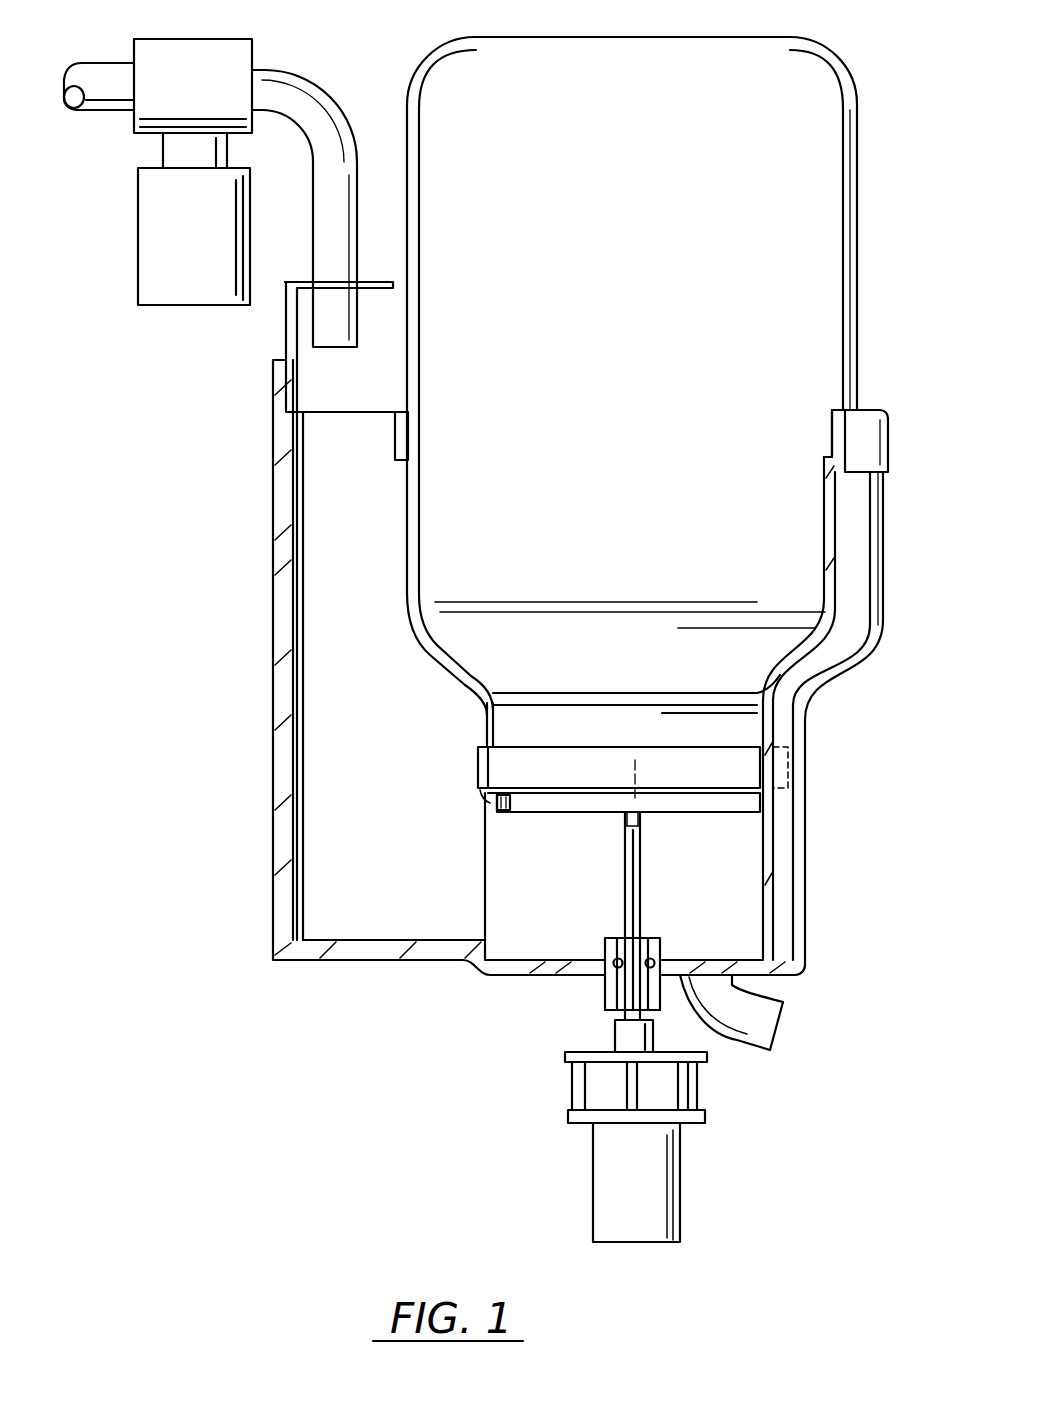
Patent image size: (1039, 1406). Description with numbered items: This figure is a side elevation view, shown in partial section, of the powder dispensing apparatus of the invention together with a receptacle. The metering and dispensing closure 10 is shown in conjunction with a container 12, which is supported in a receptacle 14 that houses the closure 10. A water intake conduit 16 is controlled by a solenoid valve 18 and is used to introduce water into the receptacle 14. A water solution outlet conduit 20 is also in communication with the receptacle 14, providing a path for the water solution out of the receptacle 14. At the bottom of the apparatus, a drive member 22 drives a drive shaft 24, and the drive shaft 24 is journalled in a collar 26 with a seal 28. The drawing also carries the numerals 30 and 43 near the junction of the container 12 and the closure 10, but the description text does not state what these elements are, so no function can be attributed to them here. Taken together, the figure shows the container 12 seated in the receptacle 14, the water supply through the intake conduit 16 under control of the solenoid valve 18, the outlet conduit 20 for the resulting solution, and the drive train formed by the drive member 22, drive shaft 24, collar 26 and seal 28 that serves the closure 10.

The metering and dispensing closure 10 is at (486, 797).
The container 12 is at (832, 283).
The receptacle 14 is at (275, 622).
The water intake conduit 16 is at (98, 62).
The solenoid valve 18 is at (150, 232).
The water solution outlet conduit 20 is at (753, 1033).
The drive member 22 is at (665, 1185).
The drive shaft 24 is at (625, 890).
The collar 26 is at (608, 1000).
The seal 28 is at (658, 965).
The collar 30 is at (478, 773).
The seal 43 is at (540, 802).